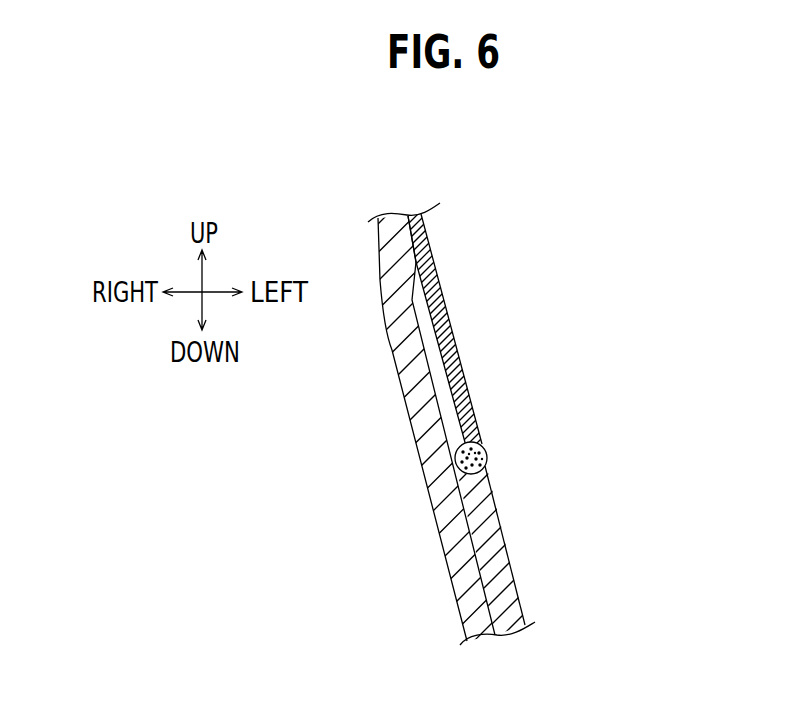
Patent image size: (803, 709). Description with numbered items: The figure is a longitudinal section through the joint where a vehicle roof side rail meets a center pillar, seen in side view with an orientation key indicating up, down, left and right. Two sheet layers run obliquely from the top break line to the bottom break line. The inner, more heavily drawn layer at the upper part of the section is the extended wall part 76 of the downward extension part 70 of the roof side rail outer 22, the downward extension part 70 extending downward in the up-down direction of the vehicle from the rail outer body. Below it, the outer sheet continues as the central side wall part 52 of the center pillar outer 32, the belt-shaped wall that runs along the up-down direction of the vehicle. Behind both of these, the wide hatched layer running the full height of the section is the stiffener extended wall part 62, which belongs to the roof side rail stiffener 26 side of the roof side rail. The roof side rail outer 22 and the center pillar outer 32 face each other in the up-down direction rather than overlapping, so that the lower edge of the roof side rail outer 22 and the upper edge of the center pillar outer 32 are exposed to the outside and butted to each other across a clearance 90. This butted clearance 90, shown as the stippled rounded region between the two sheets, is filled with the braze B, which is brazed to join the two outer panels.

The extended wall part 76 is at (374, 440).
The downward extension part 70 is at (374, 440).
The roof side rail outer 22 is at (442, 300).
The central side wall part 52 is at (510, 440).
The center pillar outer 32 is at (512, 566).
The stiffener extended wall part 62 is at (401, 440).
The roof side rail stiffener 26 is at (444, 547).
The clearance 90 is at (487, 465).
The braze B is at (506, 442).